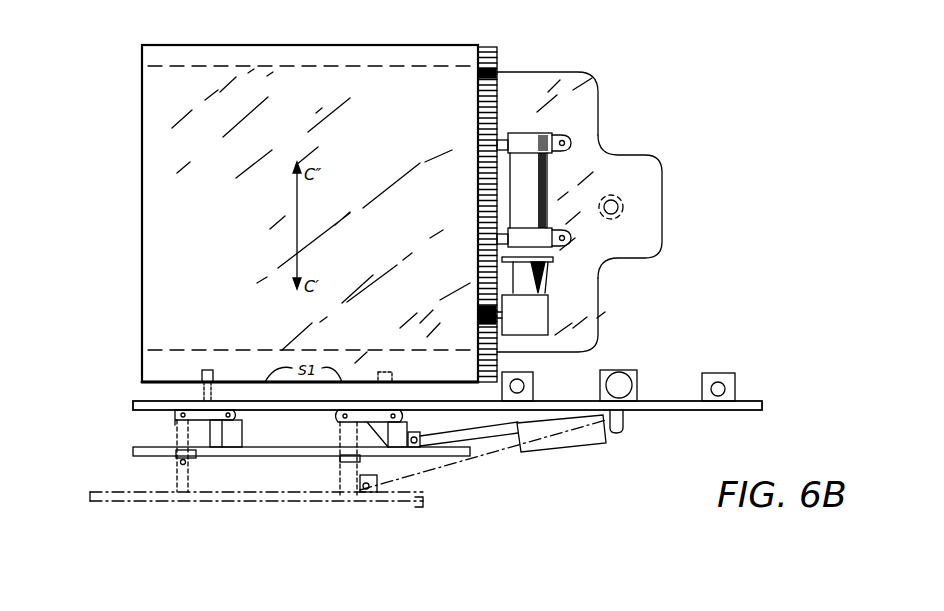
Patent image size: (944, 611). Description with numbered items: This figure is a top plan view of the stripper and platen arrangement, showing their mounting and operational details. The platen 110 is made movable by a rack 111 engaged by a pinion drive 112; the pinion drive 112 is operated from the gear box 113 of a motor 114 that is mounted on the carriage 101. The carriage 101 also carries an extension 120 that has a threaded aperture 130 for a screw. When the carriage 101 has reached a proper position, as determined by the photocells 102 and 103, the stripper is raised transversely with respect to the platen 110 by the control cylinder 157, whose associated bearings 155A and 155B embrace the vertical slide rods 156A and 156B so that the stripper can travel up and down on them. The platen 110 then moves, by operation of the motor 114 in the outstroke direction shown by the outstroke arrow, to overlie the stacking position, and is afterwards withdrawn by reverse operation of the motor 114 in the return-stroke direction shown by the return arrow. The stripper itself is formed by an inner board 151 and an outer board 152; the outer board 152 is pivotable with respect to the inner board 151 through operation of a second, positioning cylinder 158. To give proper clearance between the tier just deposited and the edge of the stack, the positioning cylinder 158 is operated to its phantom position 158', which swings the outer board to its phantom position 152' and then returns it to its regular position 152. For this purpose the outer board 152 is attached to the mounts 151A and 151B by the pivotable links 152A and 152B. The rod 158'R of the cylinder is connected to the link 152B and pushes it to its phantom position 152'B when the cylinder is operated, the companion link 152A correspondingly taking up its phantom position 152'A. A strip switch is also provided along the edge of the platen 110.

The platen 110 is at (215, 120).
The rack 111 is at (497, 60).
The carriage 101 is at (562, 82).
The extension 120 is at (599, 150).
The threaded aperture 130 is at (615, 202).
The motor 114 is at (530, 200).
The gear box 113 is at (540, 318).
The pinion drive 112 is at (478, 318).
The photocell 103 is at (382, 372).
The photocell 102 is at (208, 370).
The inner board 151 is at (133, 405).
The mount 151A is at (175, 410).
The mount 151B is at (340, 418).
The outer board 152 is at (257, 454).
The pivotable link 152A is at (205, 420).
The phantom position of pivotable link 152'A is at (148, 504).
The phantom position of outer board 152' is at (221, 513).
The pivotable link 152B is at (365, 440).
The phantom position of pivotable link 152'B is at (336, 504).
The bearing 155A is at (512, 375).
The vertical slide rod 156A is at (523, 372).
The control cylinder 157 is at (640, 372).
The bearing 155B is at (736, 388).
The vertical slide rod 156B is at (720, 382).
The positioning cylinder 158 is at (591, 443).
The phantom position of positioning cylinder 158' is at (486, 455).
The rod 158'R is at (466, 473).